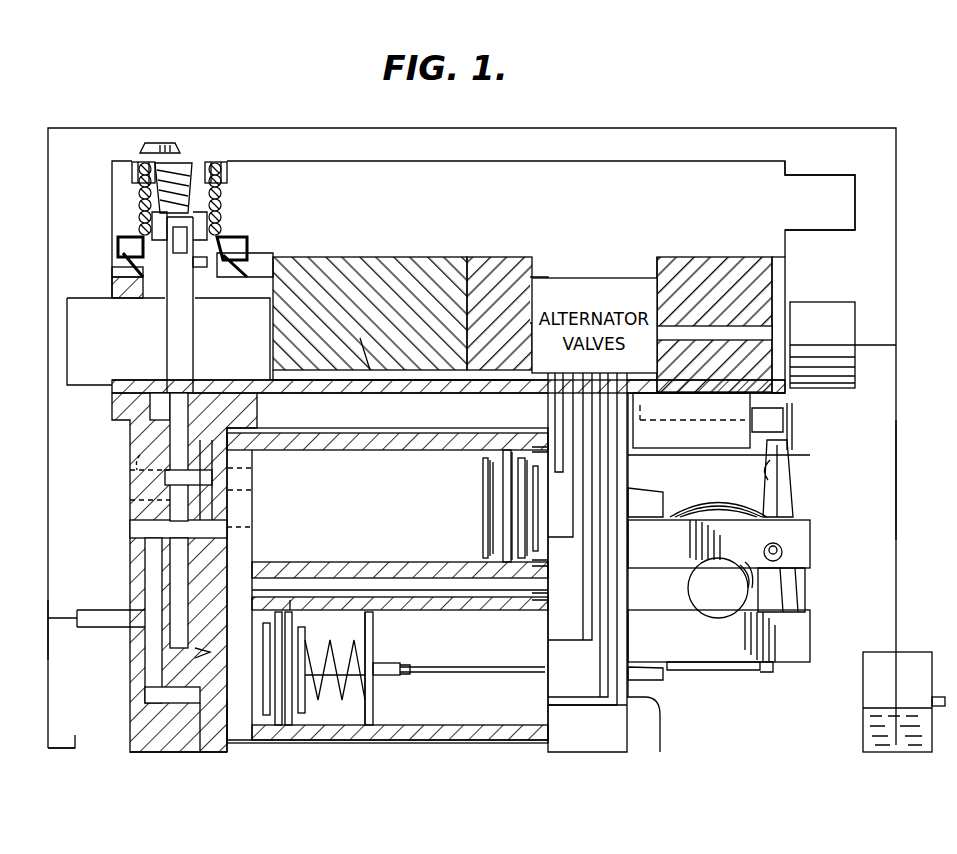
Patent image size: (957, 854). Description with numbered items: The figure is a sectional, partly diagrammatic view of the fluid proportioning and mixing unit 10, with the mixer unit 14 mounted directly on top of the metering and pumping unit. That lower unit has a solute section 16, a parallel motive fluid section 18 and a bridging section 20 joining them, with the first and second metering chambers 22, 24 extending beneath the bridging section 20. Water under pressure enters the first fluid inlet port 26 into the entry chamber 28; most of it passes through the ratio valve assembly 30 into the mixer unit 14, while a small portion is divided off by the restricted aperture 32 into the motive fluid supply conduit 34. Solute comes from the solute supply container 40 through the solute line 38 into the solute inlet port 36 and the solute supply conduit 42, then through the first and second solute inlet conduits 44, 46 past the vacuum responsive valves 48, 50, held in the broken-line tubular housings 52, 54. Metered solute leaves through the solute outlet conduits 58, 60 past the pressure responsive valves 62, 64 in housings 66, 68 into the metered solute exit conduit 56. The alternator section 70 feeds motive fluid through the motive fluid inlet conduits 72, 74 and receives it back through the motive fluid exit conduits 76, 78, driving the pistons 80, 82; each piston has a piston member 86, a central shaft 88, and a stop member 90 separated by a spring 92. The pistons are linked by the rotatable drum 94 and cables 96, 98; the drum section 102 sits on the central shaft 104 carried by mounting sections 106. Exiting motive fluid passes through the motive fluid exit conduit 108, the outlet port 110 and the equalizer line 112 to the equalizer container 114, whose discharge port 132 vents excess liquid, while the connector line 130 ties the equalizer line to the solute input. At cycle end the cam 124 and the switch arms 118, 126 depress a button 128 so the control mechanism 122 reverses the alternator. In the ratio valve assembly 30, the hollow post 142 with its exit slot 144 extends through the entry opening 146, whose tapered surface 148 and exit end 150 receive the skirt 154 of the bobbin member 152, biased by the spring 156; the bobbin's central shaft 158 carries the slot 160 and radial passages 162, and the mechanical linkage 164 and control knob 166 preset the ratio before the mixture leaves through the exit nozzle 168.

The fluid proportioning and mixing unit 10 is at (763, 755).
The mixer unit 14 is at (580, 214).
The solute section 16 is at (196, 755).
The motive fluid section 18 is at (608, 745).
The bridging section 20 is at (410, 313).
The first metering chamber 22 is at (387, 585).
The second metering chamber 24 is at (400, 668).
The first fluid inlet port 26 is at (67, 343).
The entry chamber 28 is at (232, 339).
The ratio valve assembly 30 is at (292, 209).
The restricted aperture 32 is at (272, 378).
The motive fluid supply conduit 34 is at (355, 370).
The solute inlet port 36 is at (95, 628).
The solute line 38 is at (47, 655).
The solute supply container 40 is at (52, 750).
The solute supply conduit 42 is at (145, 578).
The first solute inlet conduit 44 is at (225, 521).
The second solute inlet conduit 46 is at (208, 740).
The vacuum responsive valve 48 is at (150, 510).
The vacuum responsive valve 50 is at (188, 735).
The tubular housing 52 is at (130, 540).
The tubular housing 54 is at (130, 730).
The metered solute exit conduit 56 is at (172, 420).
The solute outlet conduit 58 is at (252, 468).
The solute outlet conduit 60 is at (236, 745).
The pressure responsive valve 62 is at (205, 466).
The pressure responsive valve 64 is at (212, 652).
The housing 66 is at (151, 451).
The housing 68 is at (130, 678).
The alternator section 70 is at (645, 262).
The motive fluid inlet conduit 72 is at (553, 478).
The motive fluid inlet conduit 74 is at (563, 638).
The motive fluid exit conduit 76 is at (558, 545).
The motive fluid exit conduit 78 is at (562, 707).
The piston 80 is at (493, 506).
The piston 82 is at (295, 598).
The piston member 86 is at (293, 742).
The central shaft 88 is at (380, 662).
The stop member 90 is at (376, 698).
The spring 92 is at (340, 645).
The rotatable drum 94 is at (730, 672).
The cable 96 is at (670, 500).
The cable 98 is at (678, 680).
The drum section 102 is at (811, 568).
The central shaft 104 is at (700, 602).
The mounting section 106 is at (797, 668).
The motive fluid exit conduit 108 is at (690, 327).
The outlet port 110 is at (828, 308).
The equalizer line 112 is at (897, 478).
The equalizer container 114 is at (905, 745).
The switch arm 118 is at (795, 450).
The control mechanism 122 is at (672, 414).
The cam 124 is at (775, 592).
The switch arm 126 is at (795, 490).
The button 128 is at (784, 422).
The connector line 130 is at (825, 130).
The discharge port 132 is at (945, 696).
The hollow post 142 is at (195, 315).
The exit slot 144 is at (190, 232).
The entry opening 146 is at (134, 290).
The tapered surface 148 is at (248, 268).
The exit end 150 is at (247, 246).
The bobbin member 152 is at (150, 222).
The skirt 154 is at (130, 238).
The spring 156 is at (222, 162).
The central shaft 158 is at (183, 180).
The slot 160 is at (205, 268).
The radial passage 162 is at (122, 272).
The mechanical linkage 164 is at (132, 188).
The control knob 166 is at (143, 143).
The exit nozzle 168 is at (846, 215).